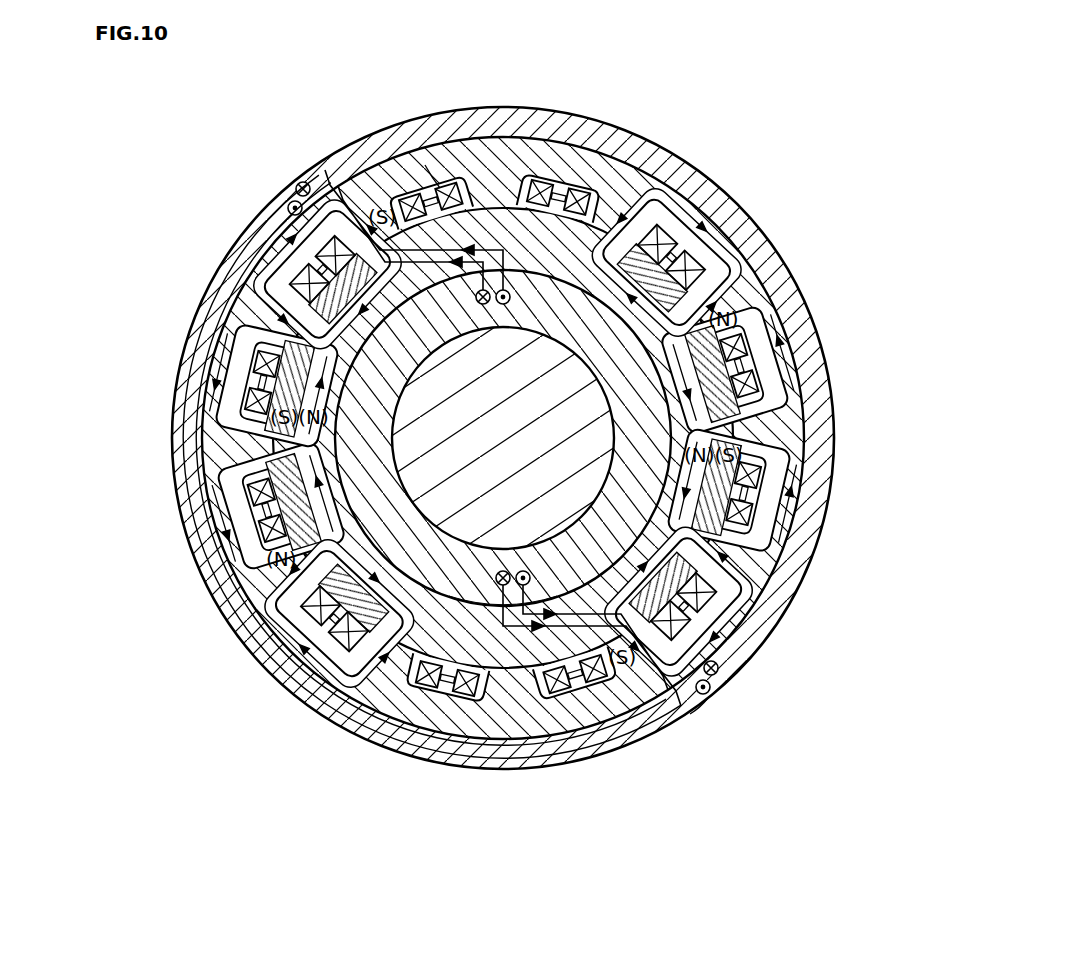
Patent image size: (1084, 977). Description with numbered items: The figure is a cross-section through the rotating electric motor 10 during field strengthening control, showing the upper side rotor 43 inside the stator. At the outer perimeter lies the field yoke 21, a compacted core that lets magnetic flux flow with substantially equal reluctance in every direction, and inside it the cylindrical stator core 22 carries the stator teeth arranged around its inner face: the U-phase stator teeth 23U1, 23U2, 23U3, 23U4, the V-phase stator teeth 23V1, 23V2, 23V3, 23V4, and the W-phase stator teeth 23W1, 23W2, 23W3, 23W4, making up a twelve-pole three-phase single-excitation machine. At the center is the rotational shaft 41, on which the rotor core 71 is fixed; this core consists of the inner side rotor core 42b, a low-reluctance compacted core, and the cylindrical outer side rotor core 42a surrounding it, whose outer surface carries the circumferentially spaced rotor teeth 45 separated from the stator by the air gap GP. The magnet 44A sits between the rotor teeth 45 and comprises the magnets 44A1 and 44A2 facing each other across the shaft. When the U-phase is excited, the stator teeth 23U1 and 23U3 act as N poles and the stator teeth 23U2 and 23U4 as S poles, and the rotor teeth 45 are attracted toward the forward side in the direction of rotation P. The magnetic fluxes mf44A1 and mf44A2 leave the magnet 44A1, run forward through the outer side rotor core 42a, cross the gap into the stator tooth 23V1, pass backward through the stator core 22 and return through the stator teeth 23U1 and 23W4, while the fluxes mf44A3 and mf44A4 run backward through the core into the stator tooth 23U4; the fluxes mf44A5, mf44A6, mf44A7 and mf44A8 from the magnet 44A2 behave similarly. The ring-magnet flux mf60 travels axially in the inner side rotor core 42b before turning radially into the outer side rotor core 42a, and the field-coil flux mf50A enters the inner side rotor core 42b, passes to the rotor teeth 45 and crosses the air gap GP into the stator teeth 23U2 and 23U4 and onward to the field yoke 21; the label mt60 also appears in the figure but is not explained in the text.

The rotating electric motor 10 is at (778, 140).
The field yoke 21 is at (610, 735).
The stator core 22 is at (778, 547).
The stator tooth of the U-phase 23U1 is at (292, 600).
The stator tooth of the U-phase 23U2 is at (725, 661).
The stator tooth of the U-phase 23U3 is at (718, 266).
The stator tooth of the U-phase 23U4 is at (293, 210).
The stator tooth of the V-phase 23V1 is at (405, 662).
The stator tooth of the V-phase 23V2 is at (718, 548).
The stator tooth of the V-phase 23V3 is at (605, 222).
The stator tooth of the V-phase 23V4 is at (250, 320).
The stator tooth of the W-phase 23W1 is at (497, 658).
The stator tooth of the W-phase 23W2 is at (747, 428).
The stator tooth of the W-phase 23W3 is at (493, 195).
The stator tooth of the W-phase 23W4 is at (262, 450).
The rotational shaft 41 is at (472, 498).
The outer side rotor core 42a is at (508, 650).
The inner side rotor core 42b is at (453, 650).
The upper side rotor 43 is at (470, 585).
The magnet 44A is at (196, 374).
The magnet 44A1 is at (262, 338).
The magnet 44A2 is at (717, 480).
The rotor teeth 45 is at (552, 228).
The rotor core 71 is at (503, 539).
The air gap GP is at (522, 640).
The direction of rotation P is at (593, 833).
The magnetic flux mf44A1 is at (282, 668).
The magnetic flux mf44A2 is at (235, 517).
The magnetic flux mf44A3 is at (312, 240).
The magnetic flux mf44A4 is at (228, 410).
The magnetic flux mf44A5 is at (713, 630).
The magnetic flux mf44A6 is at (777, 530).
The magnetic flux mf44A7 is at (722, 204).
The magnetic flux mf44A8 is at (795, 348).
The magnetic flux mf50A is at (342, 190).
The magnetic flux mf60 is at (425, 165).
The magnet torque flux mt60 is at (708, 698).